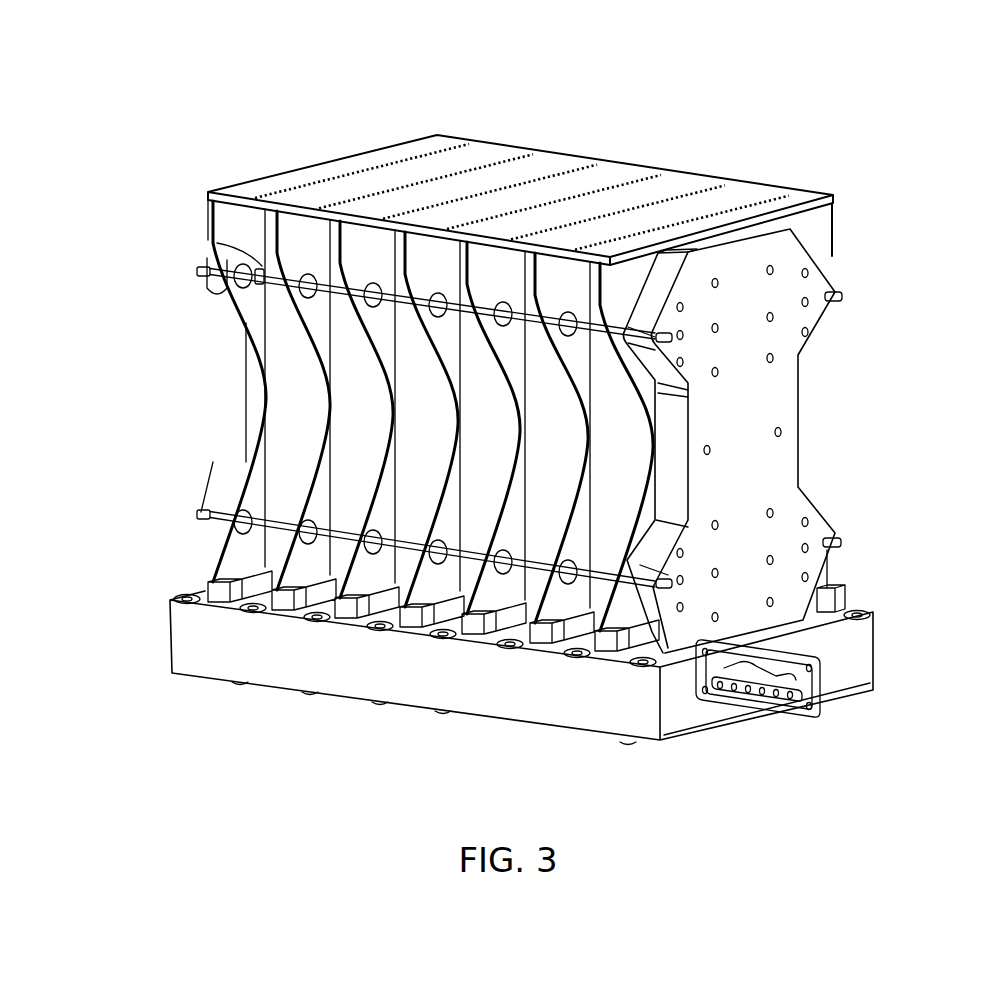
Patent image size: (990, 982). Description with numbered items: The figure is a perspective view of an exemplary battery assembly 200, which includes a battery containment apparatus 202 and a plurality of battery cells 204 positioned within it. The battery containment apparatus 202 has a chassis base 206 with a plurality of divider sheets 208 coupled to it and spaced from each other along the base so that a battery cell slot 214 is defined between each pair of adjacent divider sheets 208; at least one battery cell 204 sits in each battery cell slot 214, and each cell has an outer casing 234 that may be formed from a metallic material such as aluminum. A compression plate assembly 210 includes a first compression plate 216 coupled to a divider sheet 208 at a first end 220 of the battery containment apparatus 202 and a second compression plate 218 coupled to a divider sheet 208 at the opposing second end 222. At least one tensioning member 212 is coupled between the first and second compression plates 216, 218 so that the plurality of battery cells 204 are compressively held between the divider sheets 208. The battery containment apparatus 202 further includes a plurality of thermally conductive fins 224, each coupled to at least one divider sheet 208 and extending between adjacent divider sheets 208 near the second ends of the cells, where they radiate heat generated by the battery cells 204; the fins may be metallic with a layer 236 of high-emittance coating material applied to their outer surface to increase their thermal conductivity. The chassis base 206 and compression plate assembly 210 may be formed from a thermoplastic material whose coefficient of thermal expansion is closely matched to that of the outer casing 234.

The battery assembly 200 is at (750, 100).
The battery containment apparatus 202 is at (876, 217).
The battery cells 204 is at (351, 409).
The chassis base 206 is at (220, 680).
The divider sheets 208 is at (270, 583).
The compression plate assembly 210 is at (870, 265).
The tensioning member 212 is at (220, 242).
The battery cell slot 214 is at (313, 617).
The first compression plate 216 is at (800, 427).
The second compression plate 218 is at (245, 372).
The first end 220 is at (866, 311).
The second end 222 is at (147, 254).
The thermally conductive fins 224 is at (745, 193).
The outer casing 234 is at (290, 353).
The layer of high-emittance coating material 236 is at (693, 203).